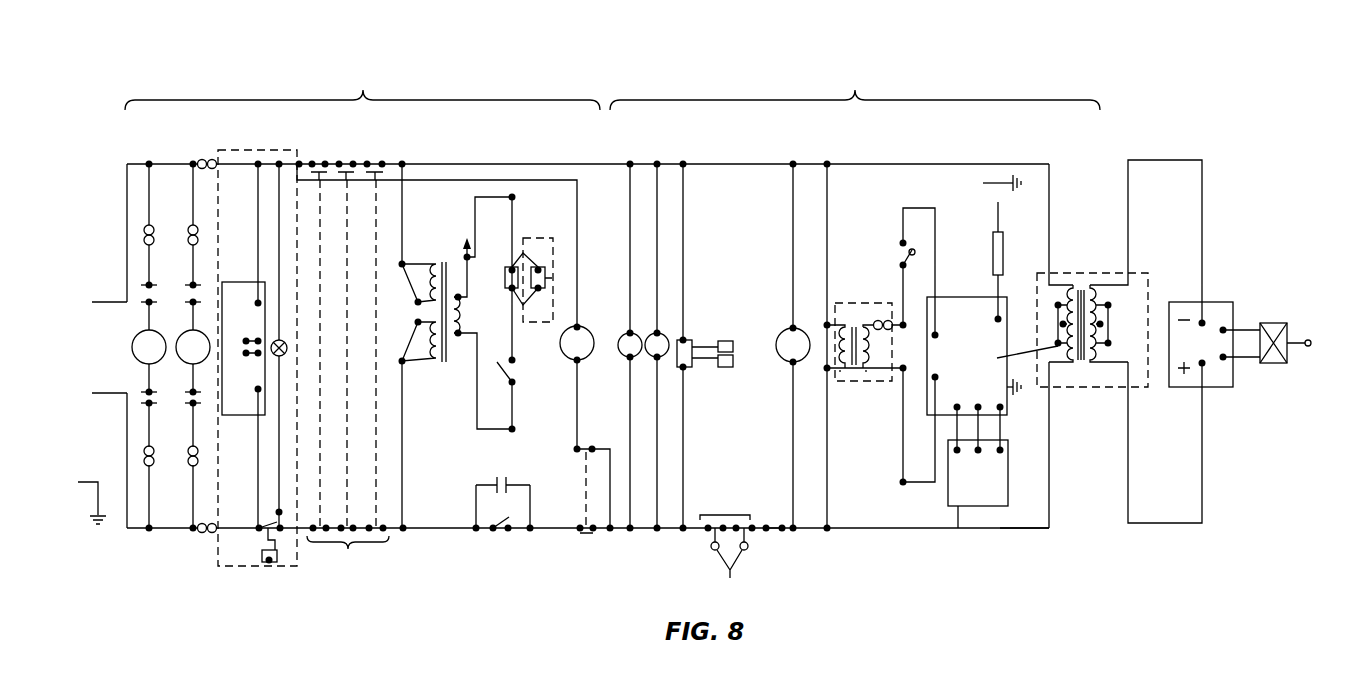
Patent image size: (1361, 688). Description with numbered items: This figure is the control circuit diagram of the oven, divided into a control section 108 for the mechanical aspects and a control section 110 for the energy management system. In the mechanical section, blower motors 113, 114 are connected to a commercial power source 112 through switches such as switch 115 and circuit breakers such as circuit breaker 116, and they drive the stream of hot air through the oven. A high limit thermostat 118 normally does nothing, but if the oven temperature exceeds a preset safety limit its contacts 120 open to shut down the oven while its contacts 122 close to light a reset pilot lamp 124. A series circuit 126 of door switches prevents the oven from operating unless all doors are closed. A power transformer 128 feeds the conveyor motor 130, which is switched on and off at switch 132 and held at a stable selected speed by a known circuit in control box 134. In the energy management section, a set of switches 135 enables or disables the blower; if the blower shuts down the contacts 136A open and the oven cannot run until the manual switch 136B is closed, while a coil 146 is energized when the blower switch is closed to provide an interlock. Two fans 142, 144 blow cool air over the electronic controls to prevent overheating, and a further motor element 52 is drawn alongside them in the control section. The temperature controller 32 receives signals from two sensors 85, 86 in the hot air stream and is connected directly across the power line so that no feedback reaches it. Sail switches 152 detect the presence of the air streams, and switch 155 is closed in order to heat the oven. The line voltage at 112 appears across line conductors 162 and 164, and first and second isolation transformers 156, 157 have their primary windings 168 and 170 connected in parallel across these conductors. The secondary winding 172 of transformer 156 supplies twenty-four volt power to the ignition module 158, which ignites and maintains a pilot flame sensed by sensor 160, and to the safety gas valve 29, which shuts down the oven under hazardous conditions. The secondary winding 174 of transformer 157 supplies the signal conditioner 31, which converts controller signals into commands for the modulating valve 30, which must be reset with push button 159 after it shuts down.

The control section 108 is at (362, 87).
The control section 110 is at (855, 87).
The commercial power source 112 is at (92, 302).
The blower motor 113 is at (132, 343).
The blower motor 114 is at (206, 333).
The switch 115 is at (145, 284).
The circuit breaker 116 is at (145, 233).
The high limit thermostat 118 is at (285, 150).
The contacts 120 is at (272, 564).
The contacts 122 is at (274, 512).
The reset pilot lamp 124 is at (277, 398).
The series circuit of door switches 126 is at (348, 378).
The power transformer 128 is at (440, 262).
The conveyor motor 130 is at (552, 278).
The switch 132 is at (518, 372).
The control box 134 is at (510, 290).
The set of switches 135 is at (485, 562).
The contacts 136A is at (510, 484).
The manual switch 136B is at (504, 536).
The fan 142 is at (626, 343).
The fan 144 is at (652, 336).
The coil 146 is at (582, 362).
The temperature controller 32 is at (688, 338).
The sensor 85 is at (726, 340).
The sensor 86 is at (726, 367).
The motor M3 52 is at (793, 320).
The first isolation transformer 156 is at (888, 303).
The primary winding 168 is at (843, 375).
The secondary winding 172 is at (866, 375).
The ignition module 158 is at (996, 297).
The sensor 160 is at (983, 183).
The primary winding 170 is at (992, 375).
The safety gas valve 29 is at (958, 528).
The line conductor 164 is at (1010, 530).
The line conductor 162 is at (1026, 164).
The second isolation transformer 157 is at (1070, 273).
The secondary winding 174 is at (1109, 305).
The signal conditioner 31 is at (1190, 387).
The modulating valve 30 is at (1272, 323).
The push button 159 is at (1311, 347).
The sail switches 152 is at (725, 515).
The switch 155 is at (778, 520).